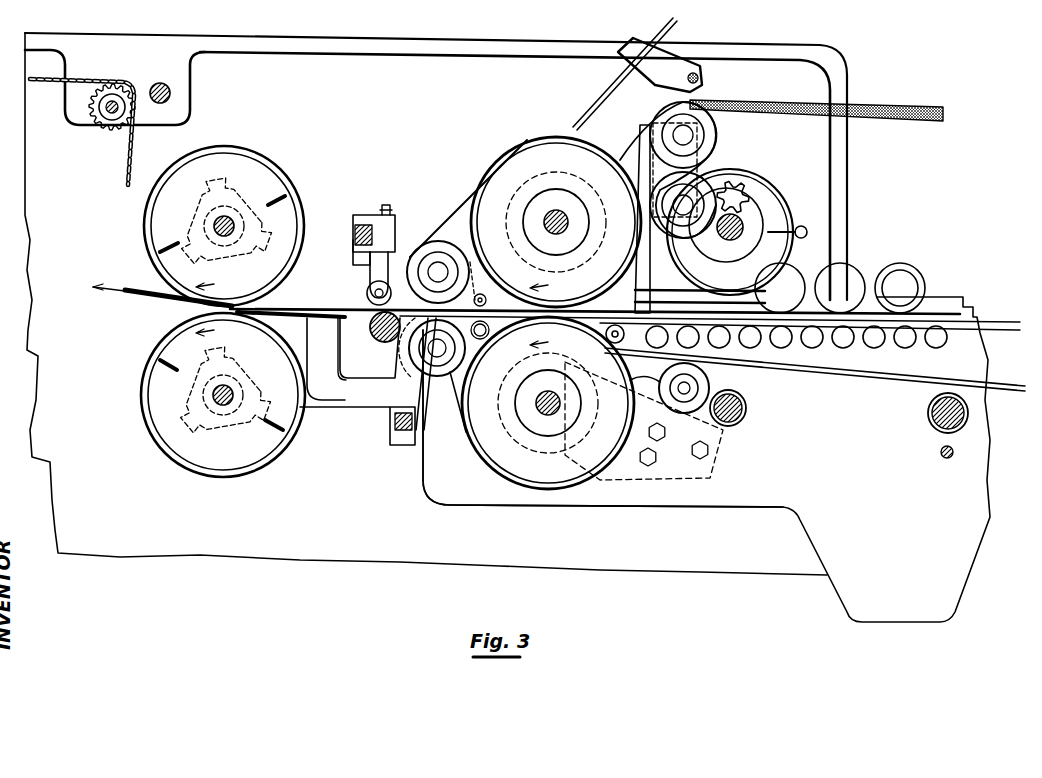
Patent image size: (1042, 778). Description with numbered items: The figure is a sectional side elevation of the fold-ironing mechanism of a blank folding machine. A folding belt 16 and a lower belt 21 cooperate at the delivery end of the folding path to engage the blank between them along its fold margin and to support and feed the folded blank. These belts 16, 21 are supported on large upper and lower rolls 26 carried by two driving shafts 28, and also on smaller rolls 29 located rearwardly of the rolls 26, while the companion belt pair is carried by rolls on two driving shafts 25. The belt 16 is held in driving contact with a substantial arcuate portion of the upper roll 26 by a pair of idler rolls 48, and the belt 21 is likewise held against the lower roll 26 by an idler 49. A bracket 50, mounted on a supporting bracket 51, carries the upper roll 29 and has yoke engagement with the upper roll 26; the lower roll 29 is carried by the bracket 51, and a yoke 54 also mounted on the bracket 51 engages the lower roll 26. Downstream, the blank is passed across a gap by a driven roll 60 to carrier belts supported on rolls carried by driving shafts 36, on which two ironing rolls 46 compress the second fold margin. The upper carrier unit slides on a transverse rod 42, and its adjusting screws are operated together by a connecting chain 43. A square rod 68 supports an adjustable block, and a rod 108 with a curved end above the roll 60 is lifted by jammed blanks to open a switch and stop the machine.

The folding belt 16 is at (897, 104).
The lower belt 21 is at (907, 376).
The driving shaft 25 is at (728, 241).
The roll 26 is at (553, 160).
The driving shaft 28 is at (548, 222).
The roll 29 is at (437, 248).
The driving shaft 36 is at (225, 236).
The transverse rod 42 is at (167, 78).
The connecting chain 43 is at (125, 163).
The ironing roll 46 is at (262, 180).
The idler roll 48 is at (700, 188).
The idler 49 is at (709, 386).
The bracket 50 is at (637, 139).
The supporting bracket 51 is at (540, 506).
The yoke 54 is at (723, 450).
The roll 60 is at (382, 338).
The square rod 68 is at (352, 240).
The rod 108 is at (618, 72).